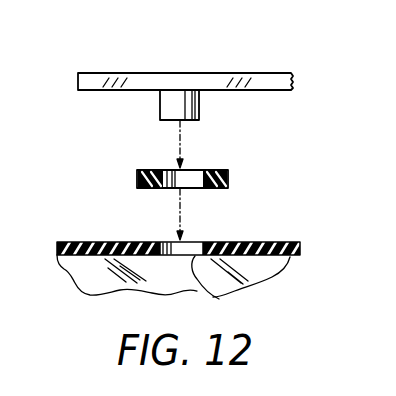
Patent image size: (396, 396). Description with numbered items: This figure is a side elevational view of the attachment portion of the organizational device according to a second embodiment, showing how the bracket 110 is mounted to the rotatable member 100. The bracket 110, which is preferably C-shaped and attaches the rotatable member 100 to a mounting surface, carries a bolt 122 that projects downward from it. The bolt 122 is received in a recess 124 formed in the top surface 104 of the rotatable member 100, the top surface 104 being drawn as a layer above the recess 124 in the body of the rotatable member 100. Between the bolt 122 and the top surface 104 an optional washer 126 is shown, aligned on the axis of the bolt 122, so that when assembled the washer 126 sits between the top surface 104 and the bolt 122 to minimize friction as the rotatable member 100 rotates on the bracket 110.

The rotatable member 100 is at (191, 233).
The top surface 104 is at (245, 240).
The bracket 110 is at (213, 72).
The bolt 122 is at (200, 107).
The recess 124 is at (275, 240).
The washer 126 is at (137, 178).